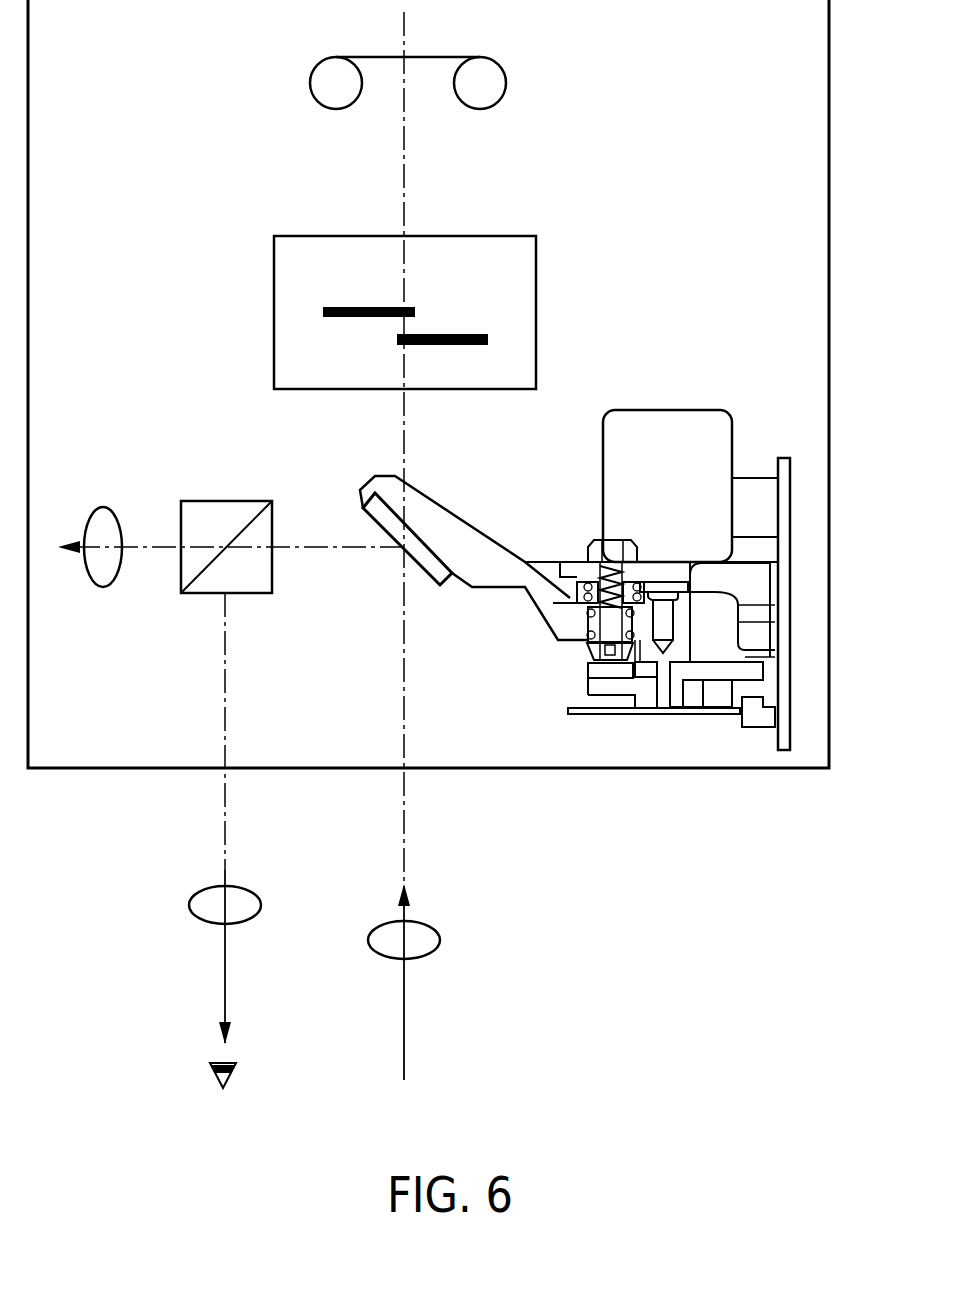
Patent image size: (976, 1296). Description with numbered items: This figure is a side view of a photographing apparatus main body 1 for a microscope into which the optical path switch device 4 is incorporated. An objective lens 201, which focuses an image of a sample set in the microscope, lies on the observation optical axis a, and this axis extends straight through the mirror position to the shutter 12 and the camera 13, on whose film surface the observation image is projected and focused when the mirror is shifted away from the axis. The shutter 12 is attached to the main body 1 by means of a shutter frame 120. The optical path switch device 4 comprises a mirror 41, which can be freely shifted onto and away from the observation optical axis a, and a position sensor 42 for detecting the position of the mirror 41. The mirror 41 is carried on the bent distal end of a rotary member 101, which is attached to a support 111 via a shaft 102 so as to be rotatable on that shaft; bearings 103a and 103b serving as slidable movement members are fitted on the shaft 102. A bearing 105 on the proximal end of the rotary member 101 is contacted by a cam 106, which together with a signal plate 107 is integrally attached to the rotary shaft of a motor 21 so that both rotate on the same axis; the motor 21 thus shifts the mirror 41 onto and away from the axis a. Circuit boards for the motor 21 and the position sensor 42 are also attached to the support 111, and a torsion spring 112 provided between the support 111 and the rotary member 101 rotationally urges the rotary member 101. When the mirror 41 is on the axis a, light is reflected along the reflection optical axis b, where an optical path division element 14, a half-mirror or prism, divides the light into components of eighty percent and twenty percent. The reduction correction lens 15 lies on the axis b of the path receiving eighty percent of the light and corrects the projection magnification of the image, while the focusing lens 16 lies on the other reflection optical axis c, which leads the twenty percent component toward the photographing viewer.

The photographing apparatus main body 1 is at (834, 356).
The optical path switch device 4 is at (890, 852).
The shutter 12 is at (334, 305).
The camera 13 is at (490, 58).
The optical path division element 14 is at (226, 501).
The reduction correction lens 15 is at (106, 504).
The focusing lens 16 is at (240, 925).
The motor 21 is at (722, 548).
The mirror 41 is at (428, 563).
The position sensor 42 is at (757, 733).
The rotary member 101 is at (488, 580).
The shaft 102 is at (603, 640).
The bearing 103a is at (593, 606).
The bearing 103b is at (632, 640).
The bearing 105 is at (608, 671).
The cam 106 is at (717, 675).
The signal plate 107 is at (690, 717).
The support 111 is at (790, 508).
The torsion spring 112 is at (592, 570).
The shutter frame 120 is at (274, 320).
The objective lens 201 is at (440, 940).
The observation optical axis a is at (402, 1013).
The reflection optical axis b is at (305, 552).
The reflection optical axis c is at (228, 807).